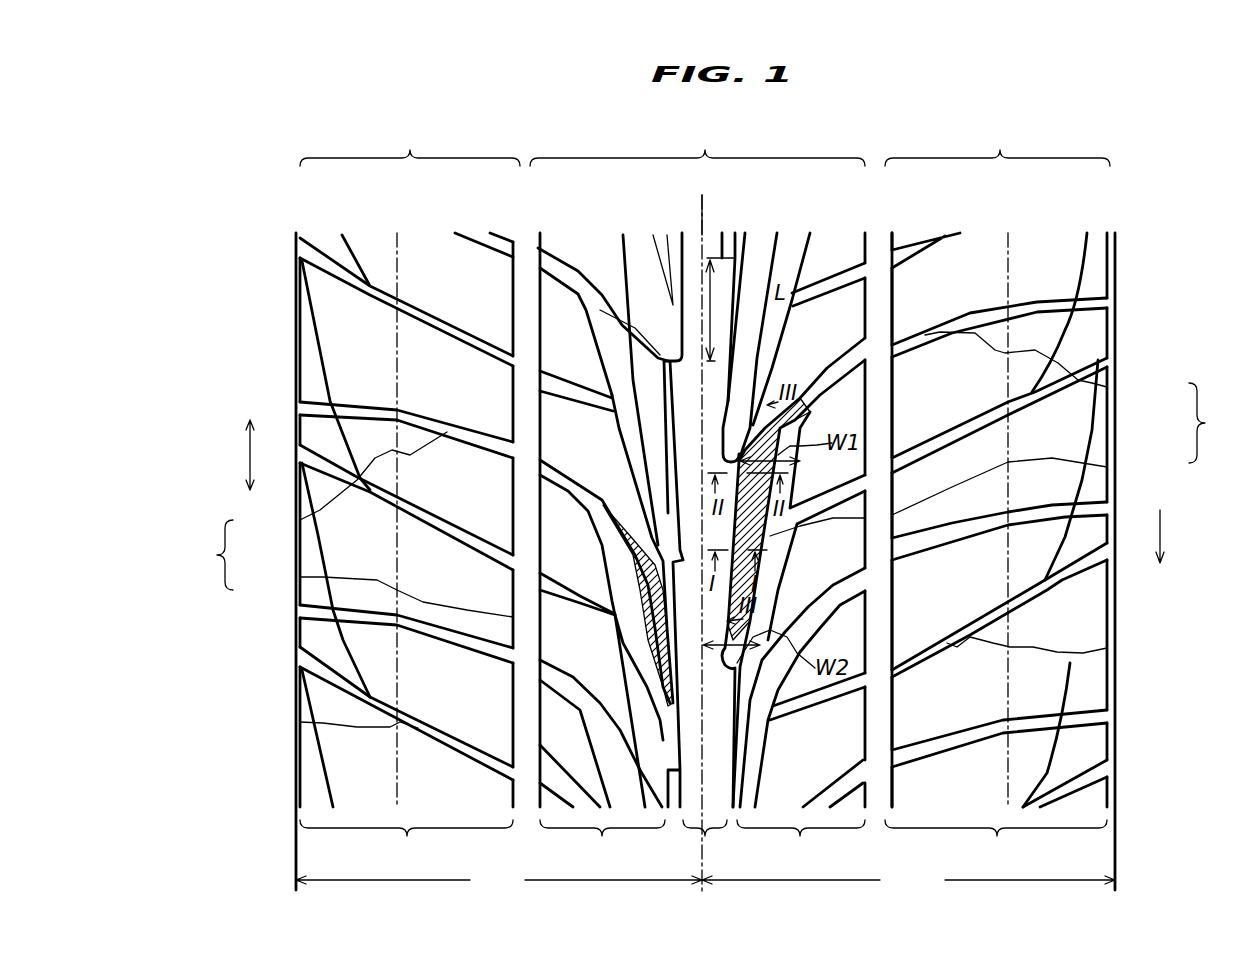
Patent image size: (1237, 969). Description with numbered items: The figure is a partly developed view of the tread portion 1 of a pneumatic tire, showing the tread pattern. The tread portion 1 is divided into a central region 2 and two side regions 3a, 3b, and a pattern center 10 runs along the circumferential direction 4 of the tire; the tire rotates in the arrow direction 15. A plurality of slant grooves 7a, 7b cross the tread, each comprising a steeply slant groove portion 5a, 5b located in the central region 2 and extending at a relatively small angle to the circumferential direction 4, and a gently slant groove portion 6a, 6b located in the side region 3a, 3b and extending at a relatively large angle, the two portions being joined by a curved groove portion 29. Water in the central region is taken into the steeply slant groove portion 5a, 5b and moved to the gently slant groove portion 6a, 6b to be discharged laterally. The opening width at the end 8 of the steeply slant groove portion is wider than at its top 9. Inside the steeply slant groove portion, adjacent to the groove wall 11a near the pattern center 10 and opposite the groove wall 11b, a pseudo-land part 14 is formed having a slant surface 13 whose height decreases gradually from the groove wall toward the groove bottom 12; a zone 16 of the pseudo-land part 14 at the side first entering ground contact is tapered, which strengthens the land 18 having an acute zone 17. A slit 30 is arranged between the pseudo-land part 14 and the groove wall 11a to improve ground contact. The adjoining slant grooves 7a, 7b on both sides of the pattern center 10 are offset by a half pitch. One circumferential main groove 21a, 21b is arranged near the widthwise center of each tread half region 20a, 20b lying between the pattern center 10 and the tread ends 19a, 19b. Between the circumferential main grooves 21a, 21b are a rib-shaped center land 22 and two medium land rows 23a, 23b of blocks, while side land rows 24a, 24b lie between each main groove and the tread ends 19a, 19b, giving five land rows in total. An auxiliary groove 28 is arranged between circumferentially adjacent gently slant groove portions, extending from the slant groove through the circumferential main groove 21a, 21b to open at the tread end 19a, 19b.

The tread portion 1 is at (849, 138).
The central region 2 is at (697, 145).
The side region 3a is at (410, 145).
The side region 3b is at (997, 145).
The circumferential direction of the tire 4 is at (250, 455).
The steeply slant groove portion 5a is at (300, 577).
The steeply slant groove portion 5b is at (1107, 467).
The gently slant groove portion 6a is at (300, 520).
The gently slant groove portion 6b is at (1107, 387).
The slant groove 7a is at (213, 555).
The slant groove 7b is at (1213, 423).
The end of the steeply slant groove portion 8 is at (820, 385).
The top of the steeply slant groove portion 9 is at (730, 670).
The pattern center 10 is at (703, 211).
The groove wall 11a is at (686, 760).
The groove wall 11b is at (640, 710).
The groove bottom 12 is at (643, 673).
The slant surface 13 is at (635, 548).
The pseudo-land part 14 is at (636, 582).
The arrow direction 15 is at (1160, 530).
The tapered zone of the pseudo-land part 16 is at (677, 713).
The acute zone 17 is at (635, 541).
The land 18 is at (567, 433).
The tread end 19a is at (296, 326).
The tread end 19b is at (1117, 300).
The tread half region 20a is at (499, 881).
The tread half region 20b is at (908, 881).
The circumferential main groove 21a is at (522, 713).
The circumferential main groove 21b is at (877, 713).
The rib-shaped center land 22 is at (699, 552).
The medium land row 23a is at (602, 845).
The medium land row 23b is at (801, 845).
The side land row 24a is at (406, 552).
The side land row 24b is at (996, 552).
The auxiliary groove 28 is at (300, 722).
The curved groove portion 29 is at (870, 333).
The slit 30 is at (663, 420).